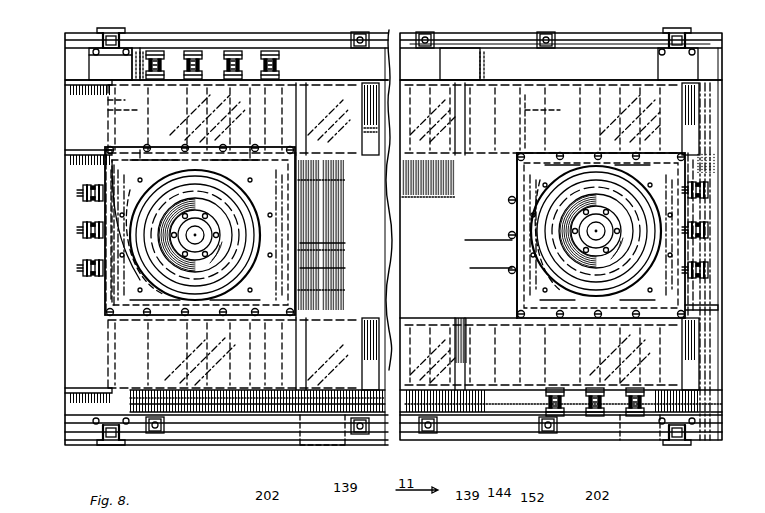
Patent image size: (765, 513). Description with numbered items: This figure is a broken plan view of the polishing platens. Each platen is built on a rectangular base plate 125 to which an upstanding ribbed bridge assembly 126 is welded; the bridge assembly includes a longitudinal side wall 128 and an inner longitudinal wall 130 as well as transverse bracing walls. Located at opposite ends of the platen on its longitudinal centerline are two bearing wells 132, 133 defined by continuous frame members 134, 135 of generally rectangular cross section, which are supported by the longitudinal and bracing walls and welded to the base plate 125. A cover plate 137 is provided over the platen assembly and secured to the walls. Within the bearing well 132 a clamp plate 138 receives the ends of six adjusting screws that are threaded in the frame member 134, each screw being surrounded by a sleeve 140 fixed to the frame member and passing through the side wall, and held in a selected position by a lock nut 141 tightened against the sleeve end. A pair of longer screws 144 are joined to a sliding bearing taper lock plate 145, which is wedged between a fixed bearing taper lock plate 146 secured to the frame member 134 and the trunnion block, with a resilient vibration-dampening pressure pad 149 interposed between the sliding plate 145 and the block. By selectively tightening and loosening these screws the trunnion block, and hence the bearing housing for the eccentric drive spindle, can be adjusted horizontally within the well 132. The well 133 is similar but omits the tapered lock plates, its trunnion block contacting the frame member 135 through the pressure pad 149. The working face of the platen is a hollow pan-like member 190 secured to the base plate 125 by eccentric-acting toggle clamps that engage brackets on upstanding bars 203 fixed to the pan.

The base plate 125 is at (85, 65).
The bridge assembly 126 is at (315, 367).
The wall 128 is at (80, 393).
The wall 130 is at (445, 318).
The bearing well 132 is at (305, 246).
The bearing well 133 is at (512, 240).
The frame member 134 is at (300, 268).
The frame member 135 is at (514, 257).
The cover plate 137 is at (418, 330).
The clamp plate 138 is at (561, 401).
The sleeve 140 is at (455, 362).
The lock nut 141 is at (460, 414).
The screw 144 is at (270, 50).
The sliding bearing taper lock plate 145 is at (300, 203).
The fixed bearing taper lock plate 146 is at (282, 226).
The pressure pad 149 is at (525, 215).
The pan-like member 190 is at (565, 36).
The upstanding bar 203 is at (600, 42).